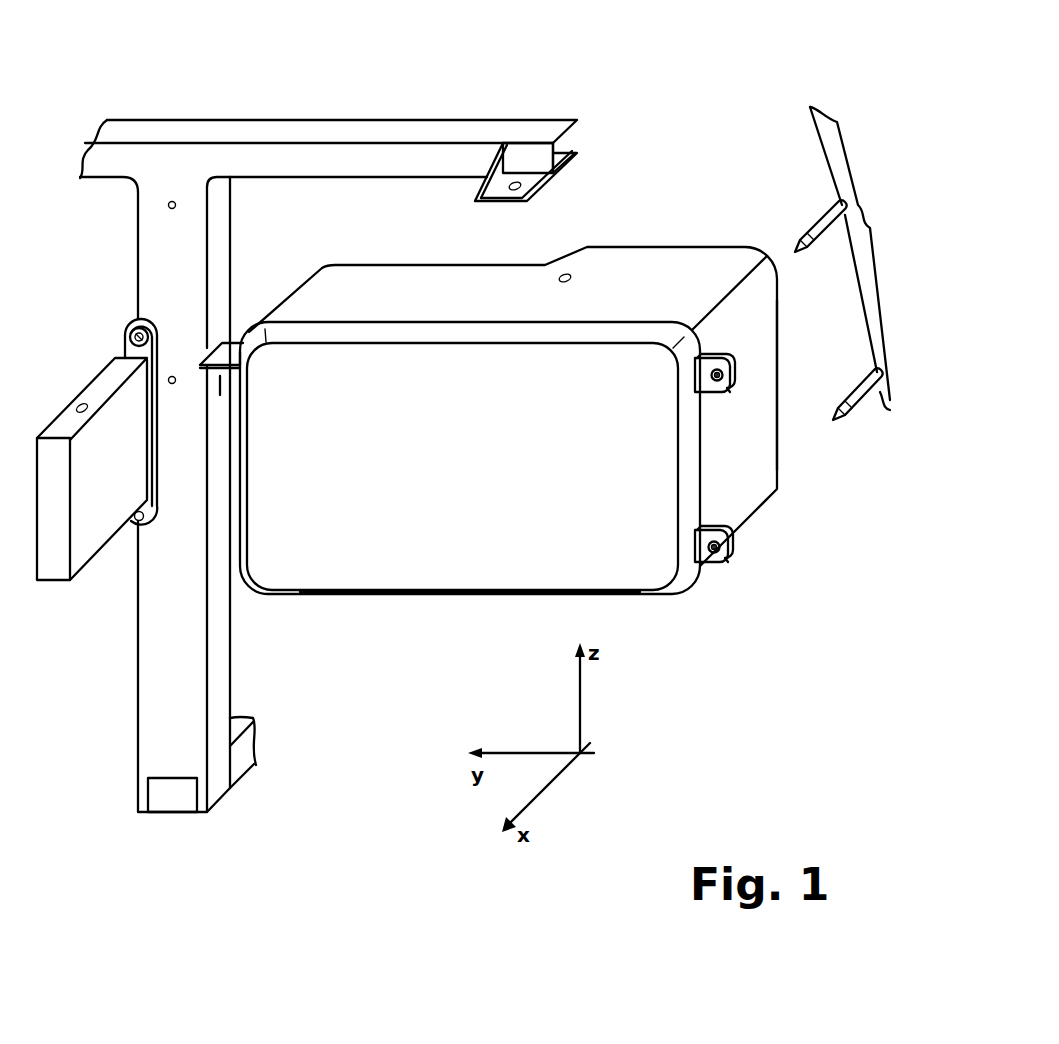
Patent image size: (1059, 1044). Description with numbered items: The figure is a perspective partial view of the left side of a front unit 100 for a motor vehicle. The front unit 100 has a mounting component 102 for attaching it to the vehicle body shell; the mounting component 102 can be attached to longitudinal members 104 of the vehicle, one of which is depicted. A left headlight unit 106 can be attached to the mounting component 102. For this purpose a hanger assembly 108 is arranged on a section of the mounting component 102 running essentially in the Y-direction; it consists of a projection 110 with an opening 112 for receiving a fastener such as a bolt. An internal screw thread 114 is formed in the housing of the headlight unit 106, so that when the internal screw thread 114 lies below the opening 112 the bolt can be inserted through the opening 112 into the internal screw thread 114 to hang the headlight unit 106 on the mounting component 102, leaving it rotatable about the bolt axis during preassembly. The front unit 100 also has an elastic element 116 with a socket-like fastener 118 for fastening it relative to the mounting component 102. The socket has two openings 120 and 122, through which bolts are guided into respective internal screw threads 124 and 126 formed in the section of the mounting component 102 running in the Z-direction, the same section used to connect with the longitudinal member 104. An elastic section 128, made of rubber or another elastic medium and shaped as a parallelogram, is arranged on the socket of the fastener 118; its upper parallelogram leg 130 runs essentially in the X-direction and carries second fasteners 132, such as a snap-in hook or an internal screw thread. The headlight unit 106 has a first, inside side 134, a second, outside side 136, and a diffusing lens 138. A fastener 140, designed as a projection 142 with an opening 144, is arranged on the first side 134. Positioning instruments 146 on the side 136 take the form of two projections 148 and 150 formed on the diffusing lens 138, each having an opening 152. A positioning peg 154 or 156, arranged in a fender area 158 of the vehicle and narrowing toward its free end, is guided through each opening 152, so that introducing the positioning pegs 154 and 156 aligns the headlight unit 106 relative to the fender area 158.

The front unit 100 is at (284, 108).
The mounting component 102 is at (430, 128).
The longitudinal member 104 is at (168, 813).
The left headlight unit 106 is at (544, 418).
The hanger assembly 108 is at (520, 200).
The projection 110 is at (475, 200).
The opening 112 is at (513, 191).
The internal screw thread 114 is at (572, 280).
The elastic element 116 is at (76, 480).
The fastener 118 is at (129, 330).
The opening 120 is at (116, 417).
The opening 122 is at (143, 521).
The internal screw thread 124 is at (177, 206).
The internal screw thread 126 is at (173, 385).
The elastic section 128 is at (52, 580).
The upper parallelogram leg 130 is at (71, 418).
The second fastener 132 is at (83, 404).
The first side 134 is at (288, 292).
The second side 136 is at (776, 378).
The diffusing lens 138 is at (641, 596).
The fastener 140 is at (222, 396).
The projection 142 is at (259, 350).
The opening 144 is at (247, 354).
The positioning instruments 146 is at (755, 576).
The projection 148 is at (721, 357).
The projection 150 is at (732, 559).
The opening 152 is at (712, 378).
The positioning peg 154 is at (815, 218).
The positioning peg 156 is at (868, 400).
The fender area 158 is at (858, 228).